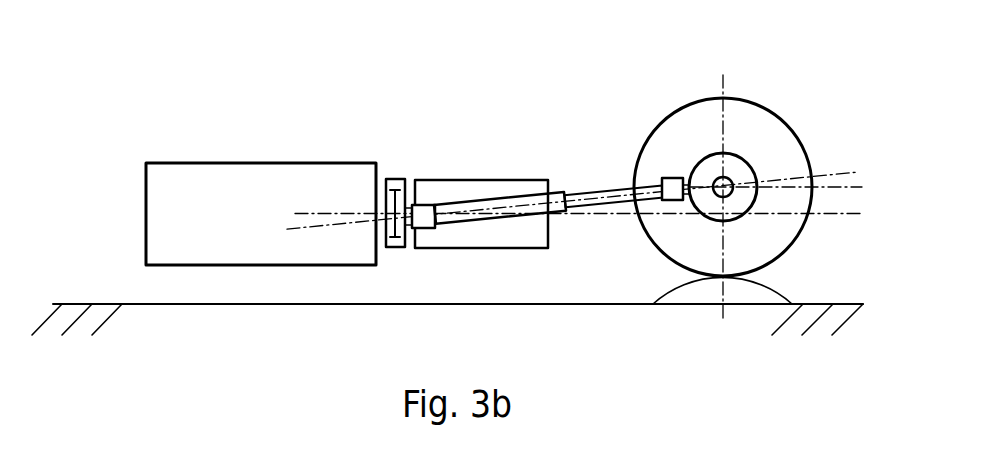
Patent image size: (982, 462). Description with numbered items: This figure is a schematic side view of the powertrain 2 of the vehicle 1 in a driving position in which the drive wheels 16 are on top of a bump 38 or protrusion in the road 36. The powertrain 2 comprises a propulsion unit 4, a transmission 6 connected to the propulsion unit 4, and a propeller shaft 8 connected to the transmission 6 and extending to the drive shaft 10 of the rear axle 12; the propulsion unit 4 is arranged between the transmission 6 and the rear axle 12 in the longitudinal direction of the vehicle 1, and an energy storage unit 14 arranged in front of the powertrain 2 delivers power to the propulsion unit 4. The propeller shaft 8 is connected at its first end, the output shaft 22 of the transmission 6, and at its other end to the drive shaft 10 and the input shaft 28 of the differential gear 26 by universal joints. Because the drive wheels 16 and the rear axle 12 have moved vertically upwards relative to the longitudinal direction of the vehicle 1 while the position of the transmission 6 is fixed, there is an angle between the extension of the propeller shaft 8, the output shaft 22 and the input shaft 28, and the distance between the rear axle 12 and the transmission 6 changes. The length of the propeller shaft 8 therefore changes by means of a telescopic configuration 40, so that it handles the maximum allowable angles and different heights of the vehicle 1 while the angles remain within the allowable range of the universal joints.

The vehicle 1 is at (205, 90).
The powertrain 2 is at (601, 102).
The propulsion unit 4 is at (440, 180).
The transmission 6 is at (394, 178).
The propeller shaft 8 is at (495, 199).
The drive shaft 10 is at (731, 194).
The rear axle 12 is at (784, 167).
The energy storage unit 14 is at (283, 163).
The drive wheels 16 is at (752, 100).
The output shaft 22 is at (409, 226).
The differential gear 26 is at (738, 155).
The input shaft 28 is at (686, 196).
The road 36 is at (102, 303).
The bump 38 is at (771, 287).
The telescopic configuration 40 is at (562, 196).